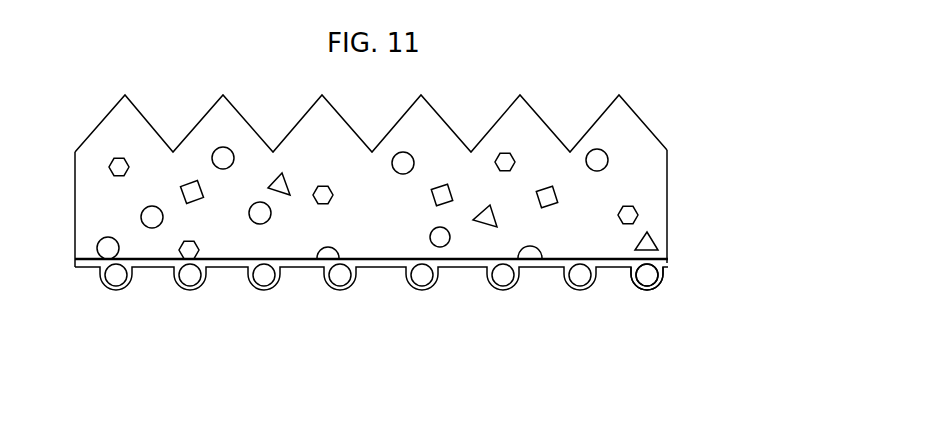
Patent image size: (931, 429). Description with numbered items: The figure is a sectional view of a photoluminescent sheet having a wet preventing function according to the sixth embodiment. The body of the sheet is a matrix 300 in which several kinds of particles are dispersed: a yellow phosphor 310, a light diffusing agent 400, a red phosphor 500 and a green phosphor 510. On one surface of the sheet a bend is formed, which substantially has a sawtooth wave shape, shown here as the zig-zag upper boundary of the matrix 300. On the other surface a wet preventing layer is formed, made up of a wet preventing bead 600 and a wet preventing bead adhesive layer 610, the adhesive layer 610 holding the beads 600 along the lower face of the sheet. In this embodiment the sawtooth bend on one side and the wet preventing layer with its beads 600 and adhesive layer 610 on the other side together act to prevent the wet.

The matrix 300 is at (668, 190).
The yellow phosphor 310 is at (668, 152).
The light diffusing agent 400 is at (447, 282).
The red phosphor 500 is at (482, 285).
The green phosphor 510 is at (550, 262).
The wet preventing bead 600 is at (650, 292).
The wet preventing bead adhesive layer 610 is at (668, 259).